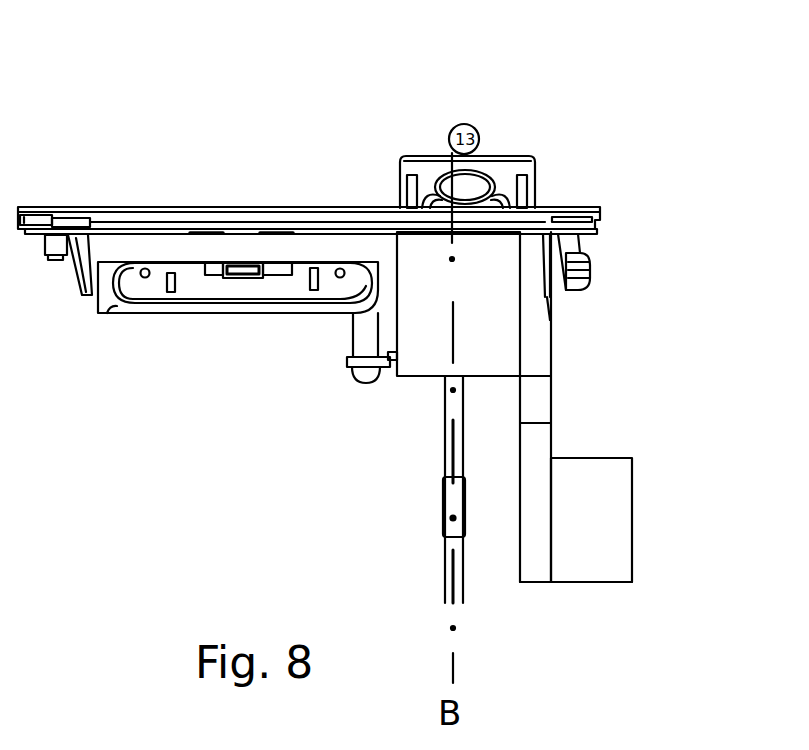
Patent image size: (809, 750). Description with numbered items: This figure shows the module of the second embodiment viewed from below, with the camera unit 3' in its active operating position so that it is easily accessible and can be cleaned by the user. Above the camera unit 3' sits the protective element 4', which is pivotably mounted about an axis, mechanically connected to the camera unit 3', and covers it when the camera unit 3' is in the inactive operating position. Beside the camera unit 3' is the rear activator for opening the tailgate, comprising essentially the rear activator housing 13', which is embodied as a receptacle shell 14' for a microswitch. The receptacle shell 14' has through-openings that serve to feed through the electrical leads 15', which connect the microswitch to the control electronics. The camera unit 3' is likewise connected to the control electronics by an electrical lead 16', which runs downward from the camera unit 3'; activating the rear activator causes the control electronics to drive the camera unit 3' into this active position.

The protective element 4' is at (467, 117).
The rear activator housing 13' is at (209, 337).
The receptacle shell 14' is at (242, 348).
The electrical leads 15' is at (258, 346).
The camera unit 3' is at (468, 407).
The electrical lead 16' is at (504, 512).